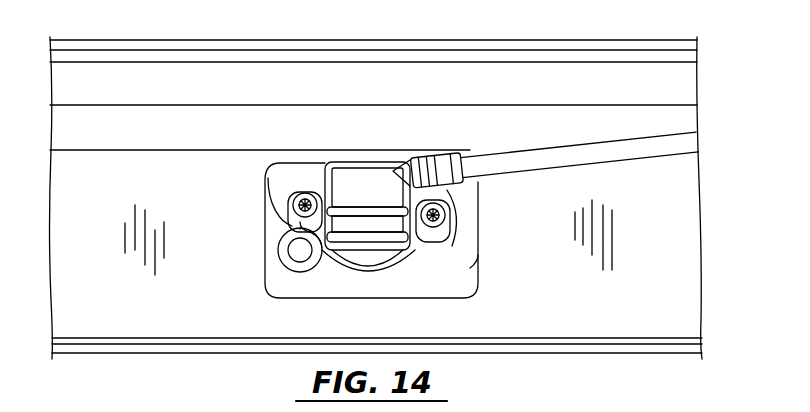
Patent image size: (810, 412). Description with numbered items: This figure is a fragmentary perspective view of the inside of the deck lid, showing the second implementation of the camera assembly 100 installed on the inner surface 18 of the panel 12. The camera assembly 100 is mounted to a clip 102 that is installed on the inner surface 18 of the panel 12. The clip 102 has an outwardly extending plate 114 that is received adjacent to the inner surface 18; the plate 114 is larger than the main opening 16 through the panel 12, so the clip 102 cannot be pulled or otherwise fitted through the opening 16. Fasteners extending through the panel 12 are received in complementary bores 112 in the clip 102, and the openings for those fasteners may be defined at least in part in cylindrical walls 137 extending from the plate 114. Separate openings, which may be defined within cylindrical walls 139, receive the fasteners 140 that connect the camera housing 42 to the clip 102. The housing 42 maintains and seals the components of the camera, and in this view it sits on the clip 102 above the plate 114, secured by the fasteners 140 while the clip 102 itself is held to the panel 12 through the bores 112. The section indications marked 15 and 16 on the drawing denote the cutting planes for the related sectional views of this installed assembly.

The panel 12 is at (702, 166).
The inner surface 18 is at (681, 313).
The housing 42 is at (350, 178).
The camera assembly 100 is at (252, 282).
The clip 102 is at (471, 279).
The bores 112 is at (300, 253).
The plate 114 is at (473, 268).
The cylindrical walls 137 is at (466, 188).
The cylindrical walls 139 is at (290, 196).
The fasteners 140 is at (303, 202).
The section line 15- 15 is at (272, 228).
The main opening 16 is at (368, 112).